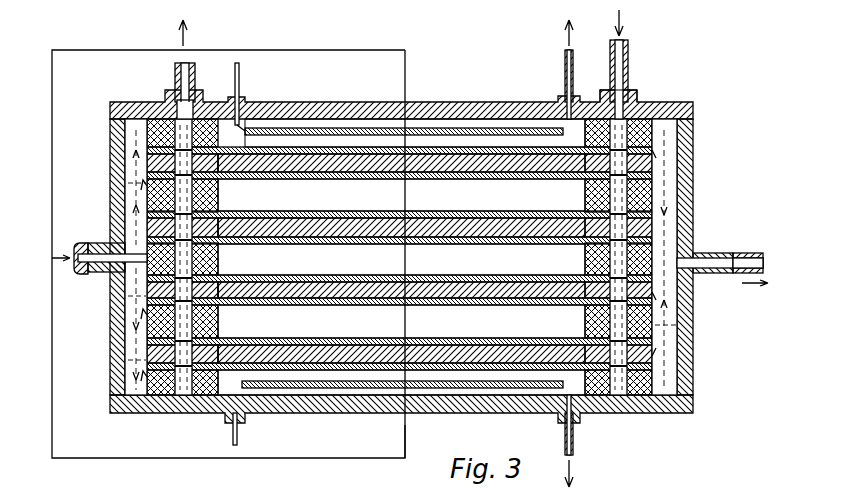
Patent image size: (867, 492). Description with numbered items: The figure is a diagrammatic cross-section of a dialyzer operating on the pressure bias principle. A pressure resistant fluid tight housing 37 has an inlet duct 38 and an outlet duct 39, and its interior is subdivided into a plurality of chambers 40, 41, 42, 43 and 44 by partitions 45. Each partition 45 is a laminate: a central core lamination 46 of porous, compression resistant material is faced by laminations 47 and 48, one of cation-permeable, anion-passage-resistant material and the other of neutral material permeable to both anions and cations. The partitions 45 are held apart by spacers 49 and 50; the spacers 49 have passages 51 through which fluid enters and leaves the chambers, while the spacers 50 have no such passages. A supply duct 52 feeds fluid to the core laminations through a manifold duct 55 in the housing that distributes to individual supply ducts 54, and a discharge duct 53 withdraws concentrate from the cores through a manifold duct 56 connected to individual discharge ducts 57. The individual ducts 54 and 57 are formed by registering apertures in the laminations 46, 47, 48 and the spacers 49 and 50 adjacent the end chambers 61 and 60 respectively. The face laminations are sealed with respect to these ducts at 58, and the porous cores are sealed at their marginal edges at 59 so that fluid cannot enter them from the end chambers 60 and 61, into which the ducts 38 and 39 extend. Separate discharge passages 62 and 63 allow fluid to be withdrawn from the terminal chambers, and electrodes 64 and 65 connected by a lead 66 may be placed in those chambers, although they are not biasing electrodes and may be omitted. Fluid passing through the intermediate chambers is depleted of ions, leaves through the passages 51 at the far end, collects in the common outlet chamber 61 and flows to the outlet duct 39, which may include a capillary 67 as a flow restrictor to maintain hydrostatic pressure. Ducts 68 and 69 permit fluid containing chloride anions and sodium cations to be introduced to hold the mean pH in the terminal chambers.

The housing 37 is at (121, 413).
The inlet duct 38 is at (91, 240).
The outlet duct 39 is at (745, 253).
The terminal chamber 40 is at (581, 146).
The chamber 41 is at (559, 206).
The intermediate chamber 42 is at (560, 271).
The intermediate chamber 43 is at (560, 331).
The chamber 44 is at (578, 392).
The partition 45 is at (422, 172).
The central core lamination 46 is at (310, 171).
The face lamination 47 is at (310, 143).
The face lamination 48 is at (314, 165).
The spacer 49 is at (212, 252).
The spacer 50 is at (656, 110).
The passage 51 is at (118, 184).
The supply duct 52 is at (623, 66).
The discharge duct 53 is at (186, 62).
The individual supply duct 54 is at (605, 413).
The manifold duct 55 is at (624, 113).
The manifold duct 56 is at (186, 110).
The individual discharge duct 57 is at (184, 395).
The seal 58 is at (176, 152).
The seal 59 is at (140, 316).
The end chamber 60 is at (130, 136).
The end chamber 61 is at (665, 331).
The discharge passage 62 is at (565, 73).
The discharge passage 63 is at (565, 443).
The electrode 64 is at (290, 130).
The electrode 65 is at (340, 389).
The lead 66 is at (88, 52).
The capillary 67 is at (704, 258).
The duct 68 is at (240, 64).
The duct 69 is at (239, 437).